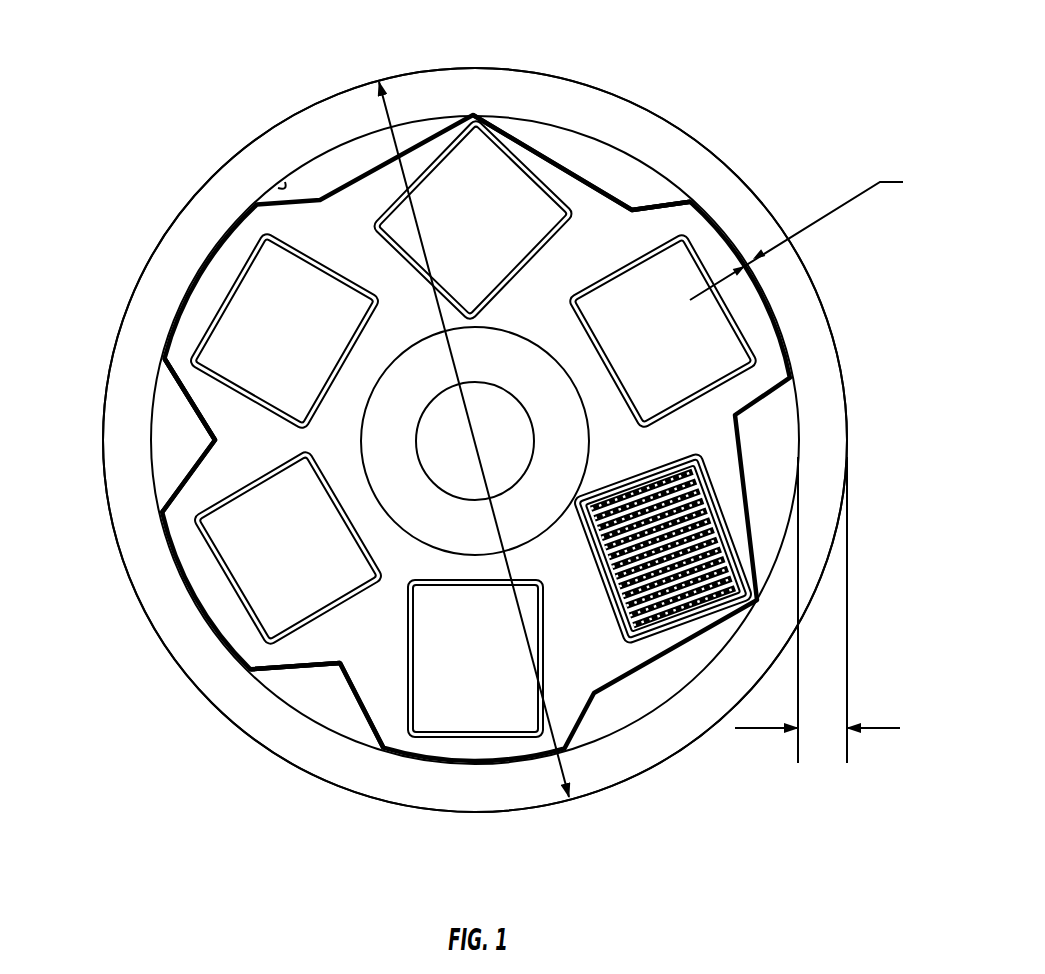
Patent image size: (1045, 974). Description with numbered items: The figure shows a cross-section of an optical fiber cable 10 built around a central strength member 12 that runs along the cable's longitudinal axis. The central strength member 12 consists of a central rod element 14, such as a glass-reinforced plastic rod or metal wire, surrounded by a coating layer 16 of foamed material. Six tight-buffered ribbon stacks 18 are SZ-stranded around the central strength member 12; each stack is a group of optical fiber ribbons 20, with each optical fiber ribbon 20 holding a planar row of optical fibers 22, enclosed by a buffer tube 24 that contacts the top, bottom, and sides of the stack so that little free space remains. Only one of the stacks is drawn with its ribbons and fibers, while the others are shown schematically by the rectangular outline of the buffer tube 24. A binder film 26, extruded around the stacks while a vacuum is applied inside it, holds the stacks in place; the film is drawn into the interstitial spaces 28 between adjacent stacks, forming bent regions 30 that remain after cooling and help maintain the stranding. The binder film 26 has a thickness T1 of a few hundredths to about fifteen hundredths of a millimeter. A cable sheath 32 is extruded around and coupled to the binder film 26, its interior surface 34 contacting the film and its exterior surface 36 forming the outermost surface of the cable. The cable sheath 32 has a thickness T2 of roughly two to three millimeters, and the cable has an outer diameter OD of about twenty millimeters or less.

The optical fiber cable 10 is at (200, 153).
The central strength member 12 is at (403, 318).
The central rod element 14 is at (442, 426).
The coating layer 16 is at (380, 423).
The tight-buffered ribbon stacks 18 is at (723, 478).
The optical fiber ribbons 20 is at (740, 567).
The optical fibers 22 is at (711, 606).
The buffer tube 24 is at (626, 640).
The binder film 26 is at (282, 672).
The interstitial spaces 28 is at (592, 222).
The bent region 30 is at (659, 195).
The cable sheath 32 is at (813, 307).
The interior surface 34 is at (285, 182).
The exterior surface 36 is at (752, 188).
The outer diameter OD is at (396, 137).
The thickness of binder film T1 is at (811, 231).
The thickness of cable sheath T2 is at (834, 610).